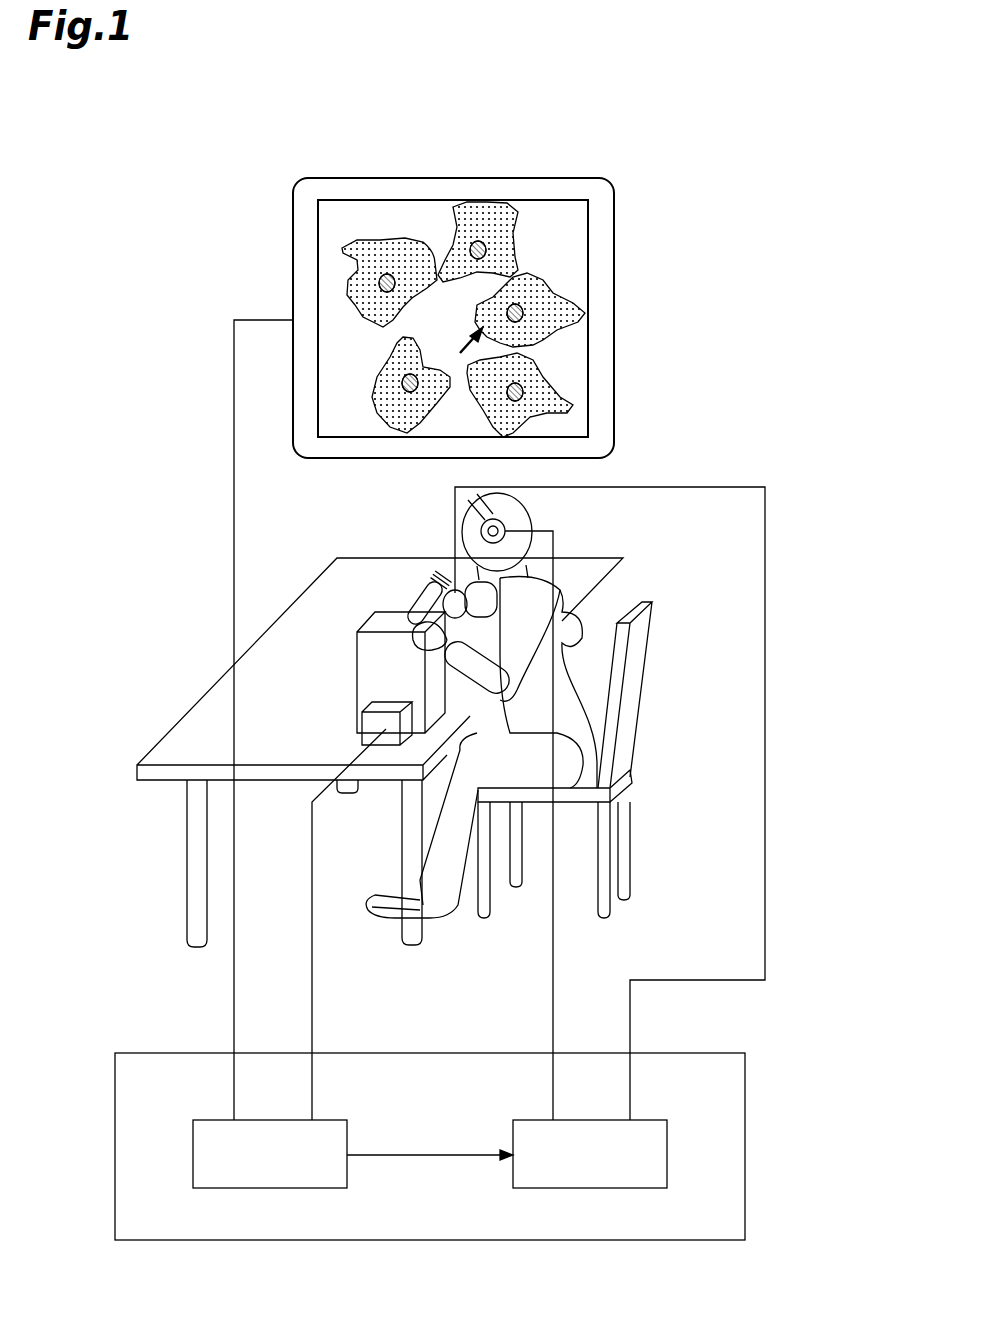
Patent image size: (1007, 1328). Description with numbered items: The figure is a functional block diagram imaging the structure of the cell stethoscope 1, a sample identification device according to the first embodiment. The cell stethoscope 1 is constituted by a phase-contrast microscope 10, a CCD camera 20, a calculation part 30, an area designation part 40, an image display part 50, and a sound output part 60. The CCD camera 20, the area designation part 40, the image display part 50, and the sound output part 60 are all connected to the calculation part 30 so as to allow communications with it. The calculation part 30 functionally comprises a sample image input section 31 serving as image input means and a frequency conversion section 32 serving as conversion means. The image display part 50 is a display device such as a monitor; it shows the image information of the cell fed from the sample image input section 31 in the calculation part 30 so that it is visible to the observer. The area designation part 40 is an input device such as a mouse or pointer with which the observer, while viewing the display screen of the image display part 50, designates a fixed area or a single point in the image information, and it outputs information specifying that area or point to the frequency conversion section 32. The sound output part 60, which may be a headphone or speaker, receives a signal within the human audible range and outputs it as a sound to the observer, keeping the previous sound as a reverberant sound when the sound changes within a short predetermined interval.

The cell stethoscope 1 is at (752, 127).
The phase-contrast microscope 10 is at (377, 618).
The CCD camera 20 is at (373, 729).
The calculation part 30 is at (658, 1053).
The sample image input section 31 is at (278, 1188).
The frequency conversion section 32 is at (598, 1188).
The area designation part 40 is at (453, 590).
The image display part 50 is at (547, 220).
The sound output part 60 is at (505, 518).